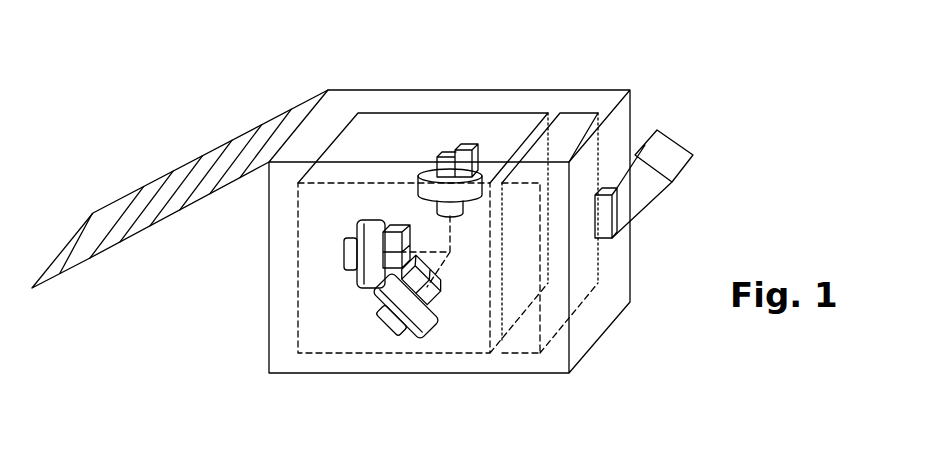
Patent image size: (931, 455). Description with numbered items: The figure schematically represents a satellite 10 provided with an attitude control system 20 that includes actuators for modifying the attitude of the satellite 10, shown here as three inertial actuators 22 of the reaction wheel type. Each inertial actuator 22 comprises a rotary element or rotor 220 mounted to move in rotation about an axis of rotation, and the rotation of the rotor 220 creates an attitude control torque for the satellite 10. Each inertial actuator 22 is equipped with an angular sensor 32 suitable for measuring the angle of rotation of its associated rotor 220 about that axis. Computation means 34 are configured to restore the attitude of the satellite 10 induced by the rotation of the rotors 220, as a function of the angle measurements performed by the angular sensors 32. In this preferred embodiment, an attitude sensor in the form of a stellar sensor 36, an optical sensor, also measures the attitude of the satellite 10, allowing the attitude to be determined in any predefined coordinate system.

The satellite 10 is at (565, 70).
The attitude control system 20 is at (486, 112).
The inertial actuator 22 is at (338, 266).
The angular sensor 32 is at (395, 225).
The computation means 34 is at (590, 300).
The stellar sensor 36 is at (660, 197).
The rotor 220 is at (363, 282).